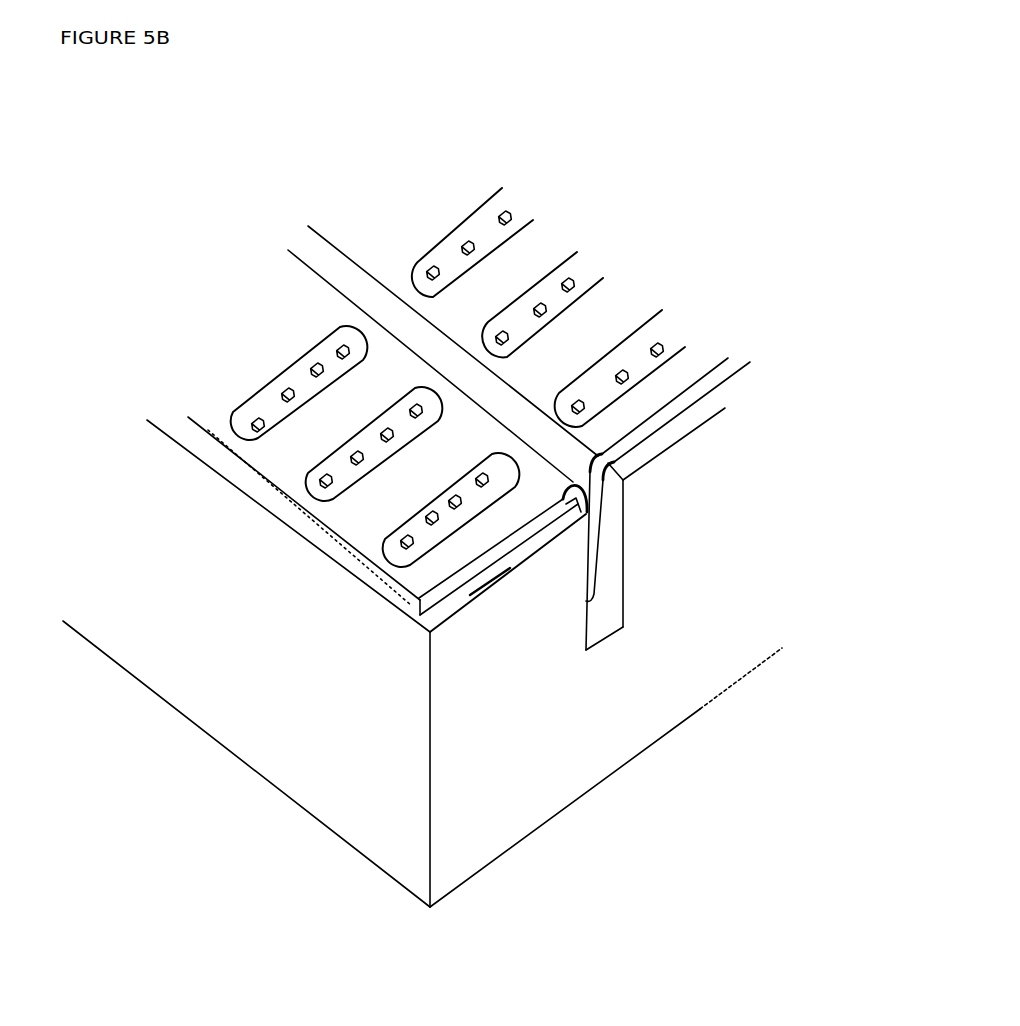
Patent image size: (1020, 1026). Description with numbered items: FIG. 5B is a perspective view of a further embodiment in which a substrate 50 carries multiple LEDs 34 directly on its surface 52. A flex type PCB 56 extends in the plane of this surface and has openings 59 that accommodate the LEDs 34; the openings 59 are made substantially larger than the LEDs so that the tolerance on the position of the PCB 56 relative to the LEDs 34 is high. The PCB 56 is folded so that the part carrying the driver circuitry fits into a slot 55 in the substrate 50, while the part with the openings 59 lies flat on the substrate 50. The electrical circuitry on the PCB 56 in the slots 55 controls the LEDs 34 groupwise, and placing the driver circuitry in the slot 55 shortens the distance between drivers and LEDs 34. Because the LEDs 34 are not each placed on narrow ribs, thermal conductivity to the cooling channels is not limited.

The LEDs 34 is at (285, 395).
The substrate 50 is at (495, 674).
The surface 52 is at (446, 604).
The slots 55 is at (608, 520).
The PCB 56 is at (598, 455).
The openings 59 is at (340, 330).